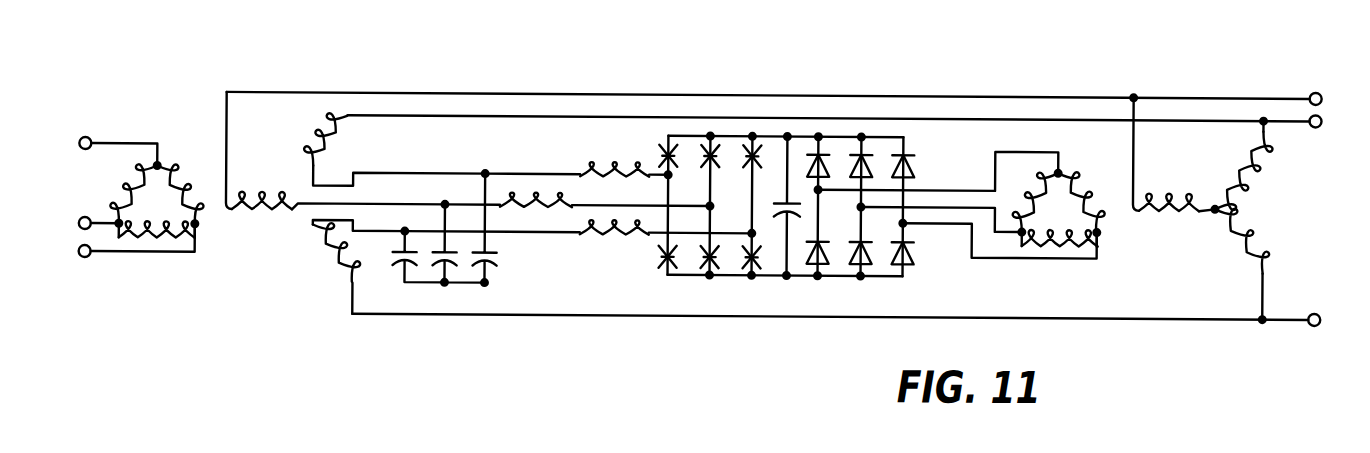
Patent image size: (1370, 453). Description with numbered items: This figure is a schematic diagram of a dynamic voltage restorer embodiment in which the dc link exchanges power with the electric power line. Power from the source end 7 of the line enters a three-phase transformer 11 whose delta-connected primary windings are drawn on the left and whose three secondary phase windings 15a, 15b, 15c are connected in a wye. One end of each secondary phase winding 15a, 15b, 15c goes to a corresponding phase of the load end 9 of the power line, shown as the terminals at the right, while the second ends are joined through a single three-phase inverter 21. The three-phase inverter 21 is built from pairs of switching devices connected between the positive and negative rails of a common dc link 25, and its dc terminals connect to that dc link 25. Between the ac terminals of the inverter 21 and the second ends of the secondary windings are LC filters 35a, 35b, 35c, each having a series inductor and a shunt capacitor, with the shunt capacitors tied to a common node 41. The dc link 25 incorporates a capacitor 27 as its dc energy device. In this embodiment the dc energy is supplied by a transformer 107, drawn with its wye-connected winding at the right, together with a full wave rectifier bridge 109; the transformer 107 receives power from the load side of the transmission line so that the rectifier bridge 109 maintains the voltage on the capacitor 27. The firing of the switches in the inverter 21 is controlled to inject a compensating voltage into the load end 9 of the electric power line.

The source end 7 is at (137, 152).
The three-phase transformer 11 is at (157, 142).
The load end 9 is at (773, 180).
The secondary phase winding 15a is at (260, 216).
The secondary phase winding 15b is at (317, 146).
The secondary phase winding 15c is at (337, 268).
The common node 41 is at (485, 284).
The LC filter 35a is at (592, 140).
The LC filter 35b is at (521, 149).
The LC filter 35c is at (598, 273).
The three-phase inverter 21 is at (727, 120).
The dc link 25 is at (783, 108).
The capacitor 27 is at (796, 217).
The full wave rectifier bridge 109 is at (929, 139).
The transformer 107 is at (1248, 209).